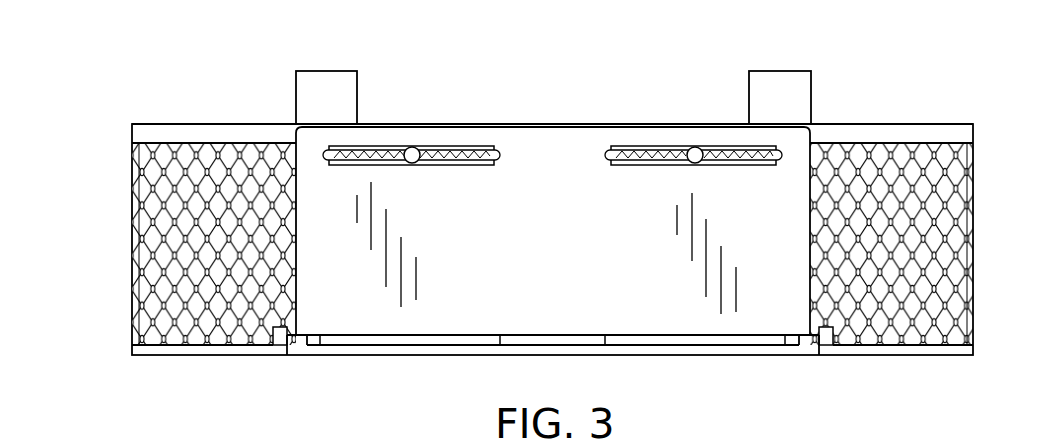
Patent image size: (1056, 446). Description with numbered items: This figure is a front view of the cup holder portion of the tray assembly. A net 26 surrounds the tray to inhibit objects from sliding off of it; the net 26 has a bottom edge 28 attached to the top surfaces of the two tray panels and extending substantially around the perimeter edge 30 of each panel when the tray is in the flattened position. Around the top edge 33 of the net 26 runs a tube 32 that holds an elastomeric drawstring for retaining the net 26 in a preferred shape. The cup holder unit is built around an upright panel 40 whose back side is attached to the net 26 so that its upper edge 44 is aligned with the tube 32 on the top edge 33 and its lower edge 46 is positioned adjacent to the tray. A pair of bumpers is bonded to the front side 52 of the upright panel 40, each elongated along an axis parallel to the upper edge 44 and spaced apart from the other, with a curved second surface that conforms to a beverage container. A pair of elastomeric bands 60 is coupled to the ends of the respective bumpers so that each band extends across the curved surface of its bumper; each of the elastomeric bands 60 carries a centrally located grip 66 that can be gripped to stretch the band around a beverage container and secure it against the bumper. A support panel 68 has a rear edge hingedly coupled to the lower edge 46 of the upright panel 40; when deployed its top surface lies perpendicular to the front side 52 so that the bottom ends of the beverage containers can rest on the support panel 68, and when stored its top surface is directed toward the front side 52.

The net 26 is at (932, 170).
The bottom edge 28 is at (922, 345).
The perimeter edge 30 is at (973, 350).
The tube 32 is at (228, 124).
The top edge 33 is at (185, 143).
The upright panel 40 is at (530, 167).
The upper edge 44 is at (497, 124).
The lower edge 46 is at (310, 355).
The front side 52 is at (583, 138).
The elastomeric bands 60 is at (377, 155).
The grip 66 is at (412, 147).
The support panel 68 is at (802, 355).